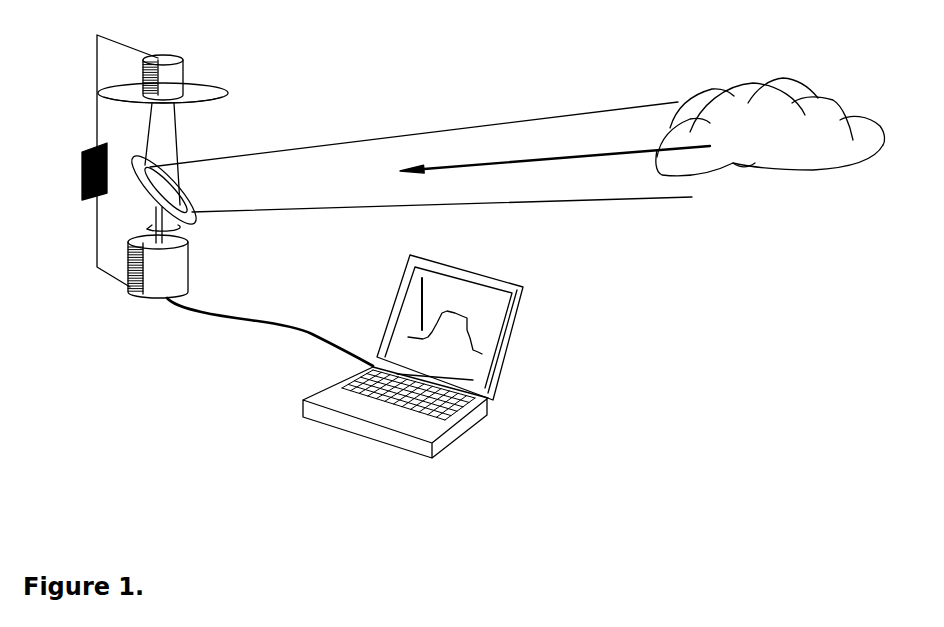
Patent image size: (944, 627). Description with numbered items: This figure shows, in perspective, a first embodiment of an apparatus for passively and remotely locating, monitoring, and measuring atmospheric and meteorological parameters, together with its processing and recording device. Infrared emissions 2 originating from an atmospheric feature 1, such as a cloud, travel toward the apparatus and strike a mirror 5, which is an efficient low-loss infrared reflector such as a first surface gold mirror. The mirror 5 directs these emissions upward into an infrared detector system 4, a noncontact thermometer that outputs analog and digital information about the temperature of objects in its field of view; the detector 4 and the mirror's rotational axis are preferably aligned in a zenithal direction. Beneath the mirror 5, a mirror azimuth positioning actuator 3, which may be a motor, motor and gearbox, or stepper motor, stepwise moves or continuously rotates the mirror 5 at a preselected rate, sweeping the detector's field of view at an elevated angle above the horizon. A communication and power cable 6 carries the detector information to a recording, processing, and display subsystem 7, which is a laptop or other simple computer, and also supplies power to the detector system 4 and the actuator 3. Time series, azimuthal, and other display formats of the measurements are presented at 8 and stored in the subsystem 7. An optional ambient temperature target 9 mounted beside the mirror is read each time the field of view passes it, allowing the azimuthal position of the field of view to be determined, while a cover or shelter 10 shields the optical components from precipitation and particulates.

The atmospheric feature 1 is at (817, 167).
The infrared emissions 2 is at (513, 163).
The mirror azimuth positioning actuator 3 is at (176, 272).
The infrared detector system 4 is at (181, 73).
The mirror 5 is at (185, 193).
The communication and power cable 6 is at (313, 340).
The recording, processing, and display subsystem 7 is at (455, 433).
The display 8 is at (470, 330).
The ambient temperature target 9 is at (82, 154).
The cover or shelter 10 is at (223, 95).